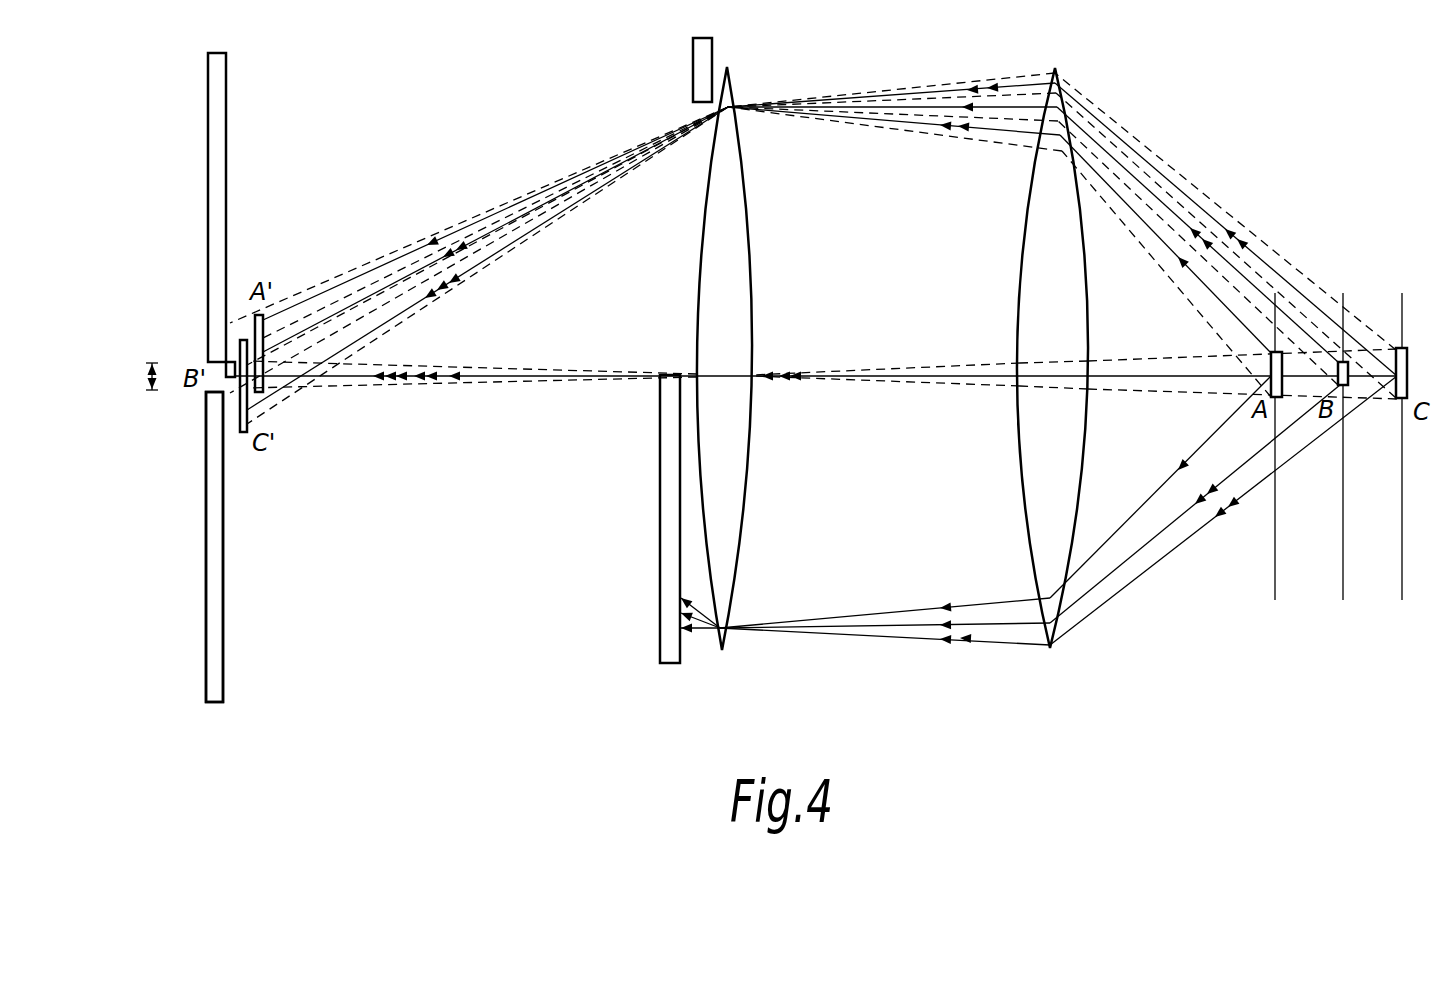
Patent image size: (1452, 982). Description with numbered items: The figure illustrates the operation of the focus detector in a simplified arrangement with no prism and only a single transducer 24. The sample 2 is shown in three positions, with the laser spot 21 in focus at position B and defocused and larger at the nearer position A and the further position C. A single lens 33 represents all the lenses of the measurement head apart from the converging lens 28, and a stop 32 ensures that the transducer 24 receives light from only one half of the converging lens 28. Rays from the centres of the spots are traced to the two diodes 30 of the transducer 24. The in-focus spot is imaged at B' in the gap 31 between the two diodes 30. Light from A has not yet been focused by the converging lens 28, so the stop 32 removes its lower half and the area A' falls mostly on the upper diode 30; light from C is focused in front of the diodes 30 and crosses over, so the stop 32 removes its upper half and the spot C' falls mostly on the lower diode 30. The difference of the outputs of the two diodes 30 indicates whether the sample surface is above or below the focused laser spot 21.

The sample 2 is at (1275, 600).
The laser spot 21 is at (1347, 362).
The transducer 24 is at (213, 714).
The converging lens 28 is at (743, 537).
The diodes 30 is at (208, 183).
The gap between the two diodes 31 is at (148, 377).
The stop 32 is at (660, 636).
The lens 33 is at (1027, 552).